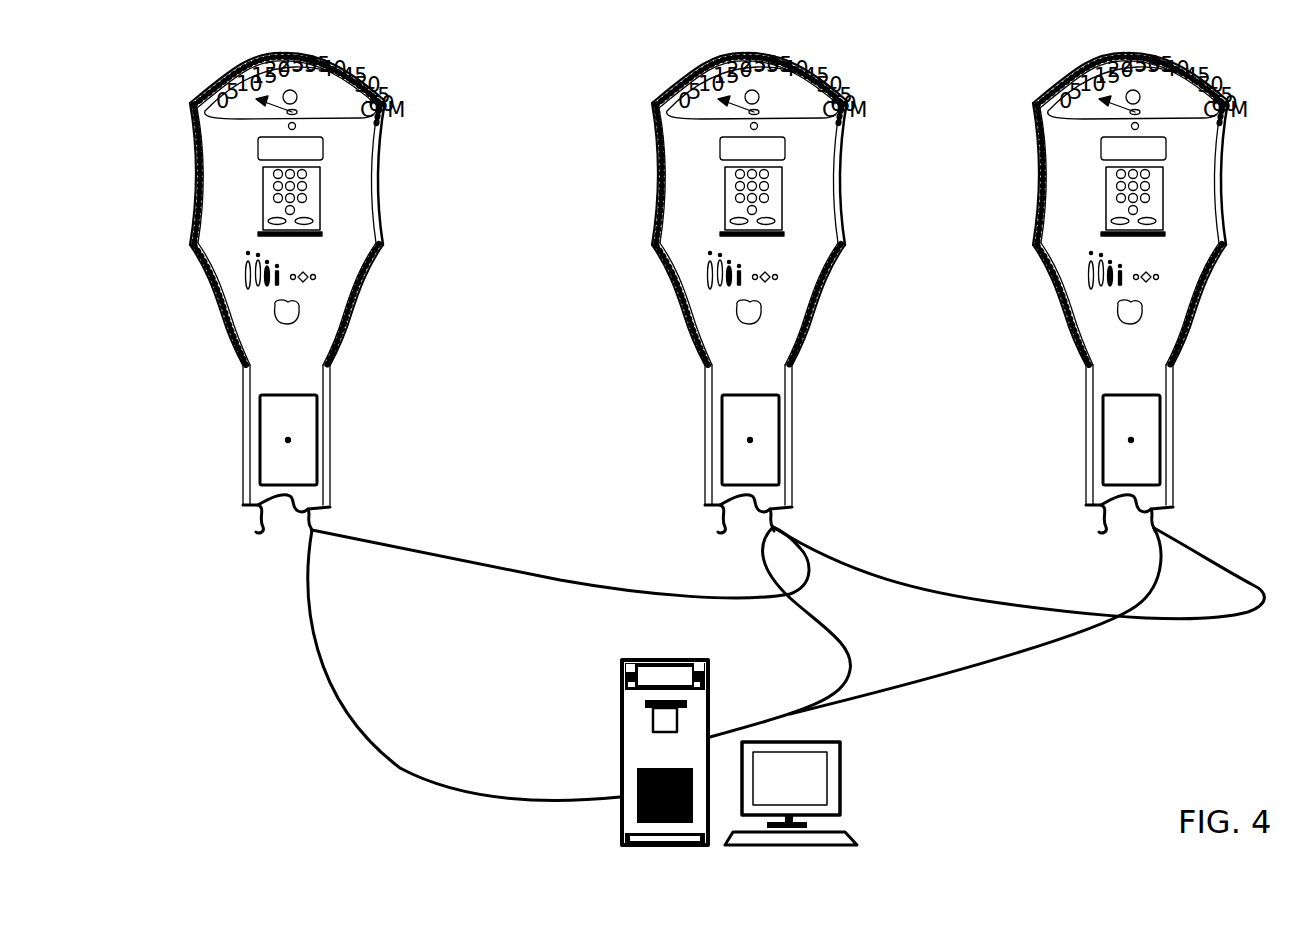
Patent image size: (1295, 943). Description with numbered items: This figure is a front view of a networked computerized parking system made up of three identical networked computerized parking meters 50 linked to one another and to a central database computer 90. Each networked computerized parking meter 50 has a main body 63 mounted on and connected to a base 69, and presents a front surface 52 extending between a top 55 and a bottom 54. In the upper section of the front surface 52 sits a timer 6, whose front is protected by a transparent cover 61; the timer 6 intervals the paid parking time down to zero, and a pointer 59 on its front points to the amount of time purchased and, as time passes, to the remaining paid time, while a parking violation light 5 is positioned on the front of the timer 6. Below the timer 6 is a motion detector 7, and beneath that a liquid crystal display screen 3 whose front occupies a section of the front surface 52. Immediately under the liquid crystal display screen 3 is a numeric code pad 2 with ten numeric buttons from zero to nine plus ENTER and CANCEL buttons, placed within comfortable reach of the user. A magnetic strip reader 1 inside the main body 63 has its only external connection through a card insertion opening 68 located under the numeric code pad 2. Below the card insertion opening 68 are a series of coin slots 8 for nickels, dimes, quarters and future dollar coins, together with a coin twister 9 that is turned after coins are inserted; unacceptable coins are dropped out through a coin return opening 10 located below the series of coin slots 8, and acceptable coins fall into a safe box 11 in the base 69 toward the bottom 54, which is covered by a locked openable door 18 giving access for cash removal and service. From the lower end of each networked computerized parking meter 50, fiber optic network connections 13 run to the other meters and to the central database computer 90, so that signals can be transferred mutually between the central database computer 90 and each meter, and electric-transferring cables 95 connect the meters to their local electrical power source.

The magnetic strip reader 1 is at (756, 223).
The numeric code pad 2 is at (755, 198).
The liquid crystal display screen 3 is at (757, 142).
The parking violation light 5 is at (676, 79).
The timer 6 is at (605, 170).
The motion detector 7 is at (647, 136).
The series of coin slots 8 is at (653, 273).
The coin twister 9 is at (764, 271).
The coin return opening 10 is at (752, 307).
The safe box 11 is at (743, 440).
The fiber optic network connections 13 is at (757, 515).
The locked openable door 18 is at (663, 425).
The networked computerized parking meter 50 is at (831, 173).
The front surface 52 is at (806, 174).
The bottom 54 is at (683, 508).
The top 55 is at (709, 77).
The pointer 59 is at (712, 87).
The transparent cover 61 is at (795, 95).
The main body 63 is at (635, 304).
The card insertion opening 68 is at (797, 368).
The base 69 is at (640, 435).
The central database computer 90 is at (620, 752).
The electric-transferring cables 95 is at (660, 522).